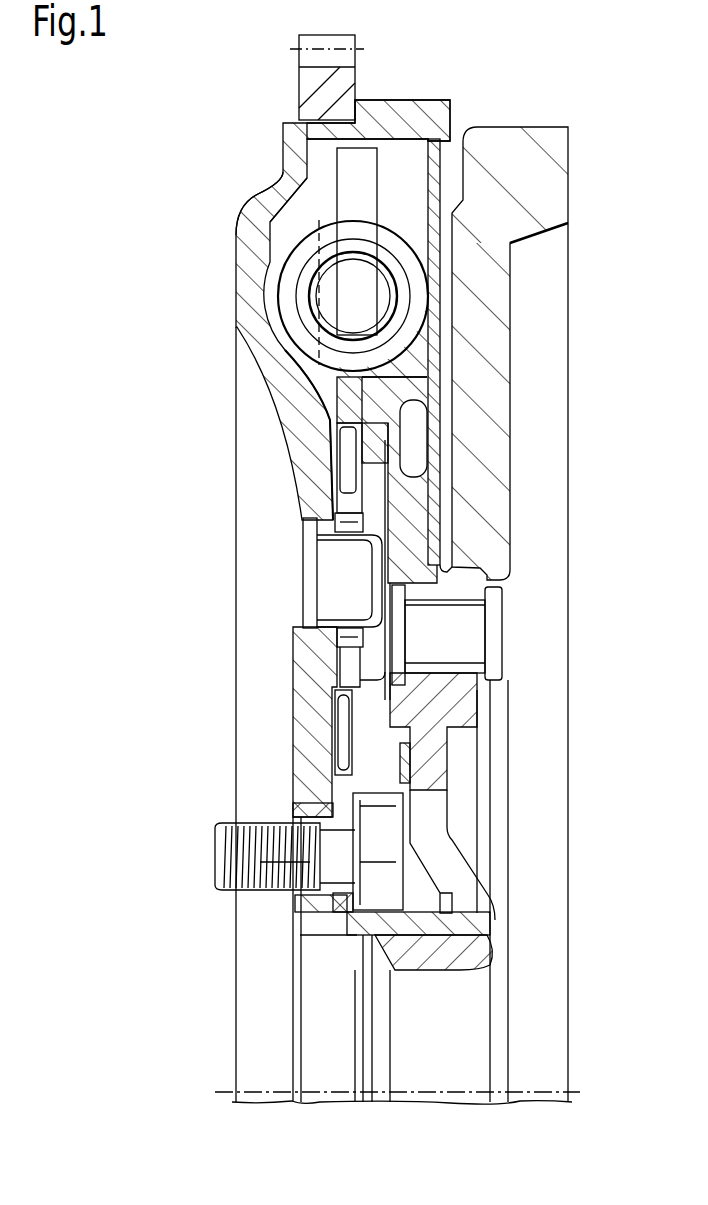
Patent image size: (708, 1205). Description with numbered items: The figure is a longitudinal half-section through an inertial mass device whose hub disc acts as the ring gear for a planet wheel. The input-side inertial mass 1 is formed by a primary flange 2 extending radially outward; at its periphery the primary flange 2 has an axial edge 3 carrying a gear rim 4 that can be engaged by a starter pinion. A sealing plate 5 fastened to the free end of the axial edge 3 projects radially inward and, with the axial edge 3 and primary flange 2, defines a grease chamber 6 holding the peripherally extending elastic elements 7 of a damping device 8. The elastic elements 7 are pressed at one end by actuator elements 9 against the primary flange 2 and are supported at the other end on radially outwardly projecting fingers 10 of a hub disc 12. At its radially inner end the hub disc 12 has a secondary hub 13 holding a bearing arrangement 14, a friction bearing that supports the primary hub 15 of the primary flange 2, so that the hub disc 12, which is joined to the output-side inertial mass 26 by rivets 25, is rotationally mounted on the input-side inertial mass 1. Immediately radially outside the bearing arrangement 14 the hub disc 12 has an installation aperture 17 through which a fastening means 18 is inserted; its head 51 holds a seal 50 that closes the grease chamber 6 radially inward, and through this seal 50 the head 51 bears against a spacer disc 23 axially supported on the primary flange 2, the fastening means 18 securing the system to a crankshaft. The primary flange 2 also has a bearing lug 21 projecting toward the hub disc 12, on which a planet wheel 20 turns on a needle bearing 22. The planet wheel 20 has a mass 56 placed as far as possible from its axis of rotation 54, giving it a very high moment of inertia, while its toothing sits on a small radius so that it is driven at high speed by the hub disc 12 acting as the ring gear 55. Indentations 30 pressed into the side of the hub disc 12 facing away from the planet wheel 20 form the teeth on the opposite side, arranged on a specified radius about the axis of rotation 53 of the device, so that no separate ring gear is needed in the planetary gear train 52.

The input-side inertial mass 1 is at (293, 708).
The primary flange 2 is at (320, 650).
The axial edge 3 is at (381, 94).
The gear rim 4 is at (312, 86).
The sealing plate 5 is at (445, 130).
The grease chamber 6 is at (317, 397).
The elastic elements 7 is at (290, 296).
The damping device 8 is at (285, 250).
The actuator elements 9 is at (290, 207).
The fingers 10 is at (368, 165).
The hub disc 12 is at (440, 750).
The secondary hub 13 is at (478, 950).
The bearing arrangement 14 is at (363, 953).
The primary hub 15 is at (313, 920).
The installation aperture 17 is at (440, 845).
The fastening means 18 is at (215, 878).
The planet wheel 20 is at (293, 440).
The bearing lug 21 is at (360, 540).
The needle bearing 22 is at (330, 648).
The spacer disc 23 is at (317, 812).
The rivets 25 is at (497, 622).
The output-side inertial mass 26 is at (500, 555).
The indentations 30 is at (405, 450).
The seal 50 is at (405, 778).
The head 51 is at (387, 887).
The planetary gear train 52 is at (402, 468).
The axis of rotation 53 is at (222, 1092).
The axis of rotation 54 is at (400, 578).
The ring gear 55 is at (413, 383).
The mass 56 is at (345, 742).